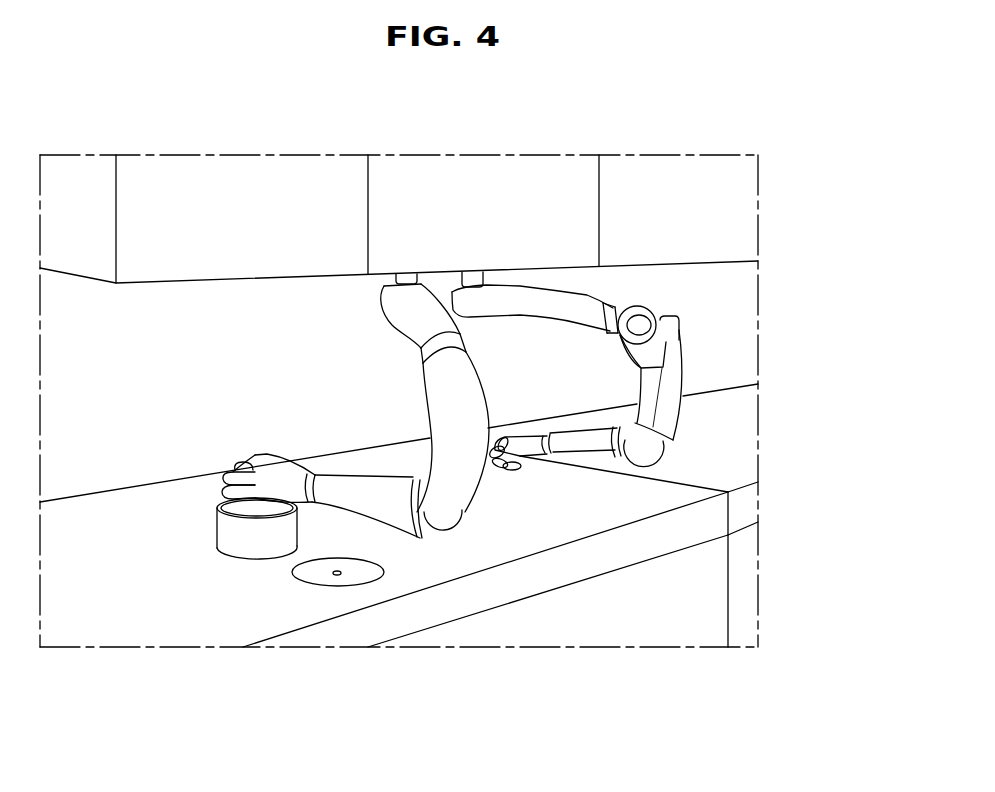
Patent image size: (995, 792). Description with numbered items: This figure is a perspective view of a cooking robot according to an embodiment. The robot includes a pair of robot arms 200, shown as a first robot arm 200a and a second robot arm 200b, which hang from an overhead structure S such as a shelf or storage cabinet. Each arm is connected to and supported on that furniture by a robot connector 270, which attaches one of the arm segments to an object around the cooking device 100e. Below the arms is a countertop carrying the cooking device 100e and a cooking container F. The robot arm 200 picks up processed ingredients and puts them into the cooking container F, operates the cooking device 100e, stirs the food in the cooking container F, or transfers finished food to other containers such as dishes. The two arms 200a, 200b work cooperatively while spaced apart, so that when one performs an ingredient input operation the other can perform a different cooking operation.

The robot connector 270 is at (408, 275).
The cabinet / sink structure S is at (525, 194).
The robot arm 200 is at (540, 502).
The robot arm 200a is at (464, 479).
The robot arm 200b is at (676, 371).
The cooking container F is at (258, 548).
The cooking device 100e is at (338, 580).